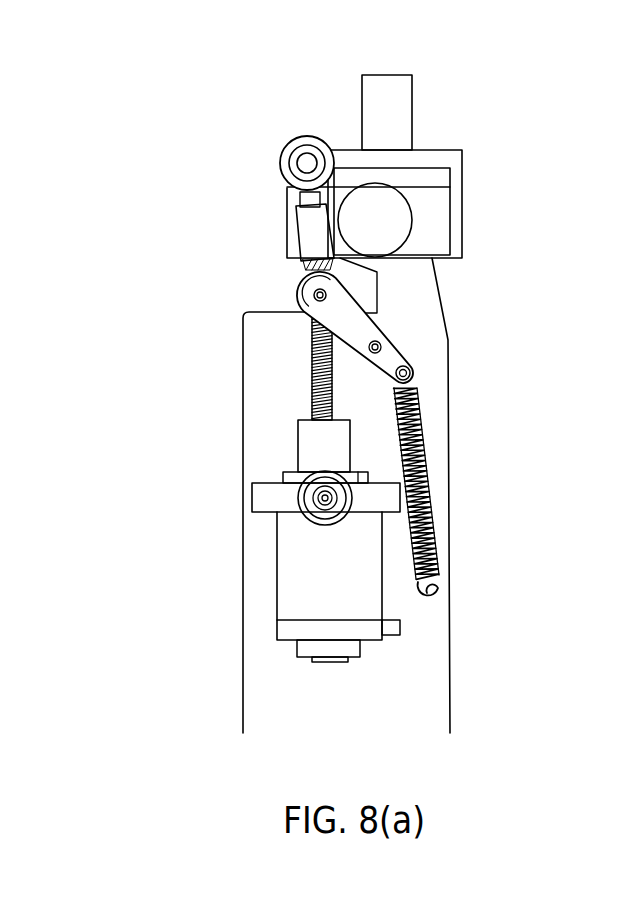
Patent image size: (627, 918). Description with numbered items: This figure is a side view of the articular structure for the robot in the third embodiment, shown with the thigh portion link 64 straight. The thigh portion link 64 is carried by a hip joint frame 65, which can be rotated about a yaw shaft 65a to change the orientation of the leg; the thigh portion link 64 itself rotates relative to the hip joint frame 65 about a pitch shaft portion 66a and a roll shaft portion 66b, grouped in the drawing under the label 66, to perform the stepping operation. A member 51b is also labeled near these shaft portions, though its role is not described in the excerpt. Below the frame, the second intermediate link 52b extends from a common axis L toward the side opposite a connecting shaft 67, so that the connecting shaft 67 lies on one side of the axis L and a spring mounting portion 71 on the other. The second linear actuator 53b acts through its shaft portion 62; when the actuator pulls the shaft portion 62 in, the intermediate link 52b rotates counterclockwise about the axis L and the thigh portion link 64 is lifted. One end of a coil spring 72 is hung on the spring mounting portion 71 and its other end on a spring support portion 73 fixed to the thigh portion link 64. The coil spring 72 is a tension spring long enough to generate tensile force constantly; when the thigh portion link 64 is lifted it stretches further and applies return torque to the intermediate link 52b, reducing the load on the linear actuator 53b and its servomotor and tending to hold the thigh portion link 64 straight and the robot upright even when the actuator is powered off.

The pressing member 51b is at (288, 241).
The second intermediate link 52b is at (353, 327).
The second linear actuator 53b is at (297, 563).
The shaft portion 62 is at (312, 398).
The thigh portion link 64 is at (428, 668).
The hip joint frame 65 is at (432, 158).
The yaw shaft 65a is at (397, 96).
The roller unit 66 is at (264, 170).
The pitch shaft portion 66a is at (373, 207).
The roll shaft portion 66b is at (288, 192).
The connecting shaft 67 is at (298, 293).
The spring mounting portion 71 is at (415, 367).
The coil spring 72 is at (428, 473).
The spring support portion 73 is at (447, 590).
The common axis L is at (388, 350).